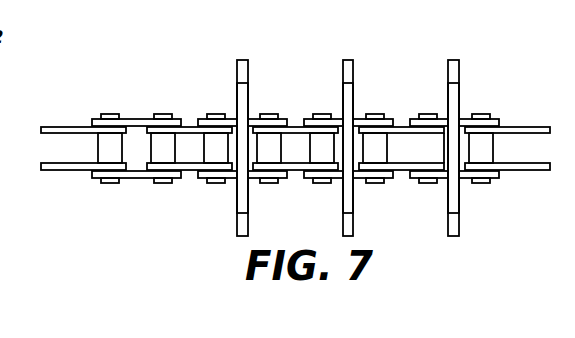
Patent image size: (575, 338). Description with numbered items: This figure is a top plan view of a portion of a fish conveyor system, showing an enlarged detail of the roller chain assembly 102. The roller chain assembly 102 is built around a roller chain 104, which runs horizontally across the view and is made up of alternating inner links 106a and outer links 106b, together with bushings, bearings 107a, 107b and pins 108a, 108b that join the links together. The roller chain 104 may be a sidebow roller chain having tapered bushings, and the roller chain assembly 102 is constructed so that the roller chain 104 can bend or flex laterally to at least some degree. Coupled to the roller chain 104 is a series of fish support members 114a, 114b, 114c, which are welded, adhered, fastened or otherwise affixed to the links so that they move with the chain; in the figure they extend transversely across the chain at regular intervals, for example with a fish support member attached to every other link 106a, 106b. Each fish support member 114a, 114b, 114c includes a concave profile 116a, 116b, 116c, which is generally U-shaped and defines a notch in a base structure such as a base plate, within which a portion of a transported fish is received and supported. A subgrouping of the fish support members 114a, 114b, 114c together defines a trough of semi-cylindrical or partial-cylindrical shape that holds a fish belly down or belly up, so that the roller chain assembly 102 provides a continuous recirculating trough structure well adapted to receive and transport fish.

The roller chain assembly 102 is at (513, 57).
The roller chain 104 is at (230, 57).
The inner link 106a is at (66, 167).
The outer link 106b is at (137, 182).
The bearing 107a is at (107, 148).
The bearing 107b is at (157, 147).
The pin 108a is at (107, 184).
The pin 108b is at (163, 184).
The fish support member 114a is at (243, 60).
The fish support member 114b is at (348, 60).
The fish support member 114c is at (453, 60).
The concave profile 116a is at (245, 99).
The concave profile 116b is at (352, 100).
The concave profile 116c is at (458, 99).